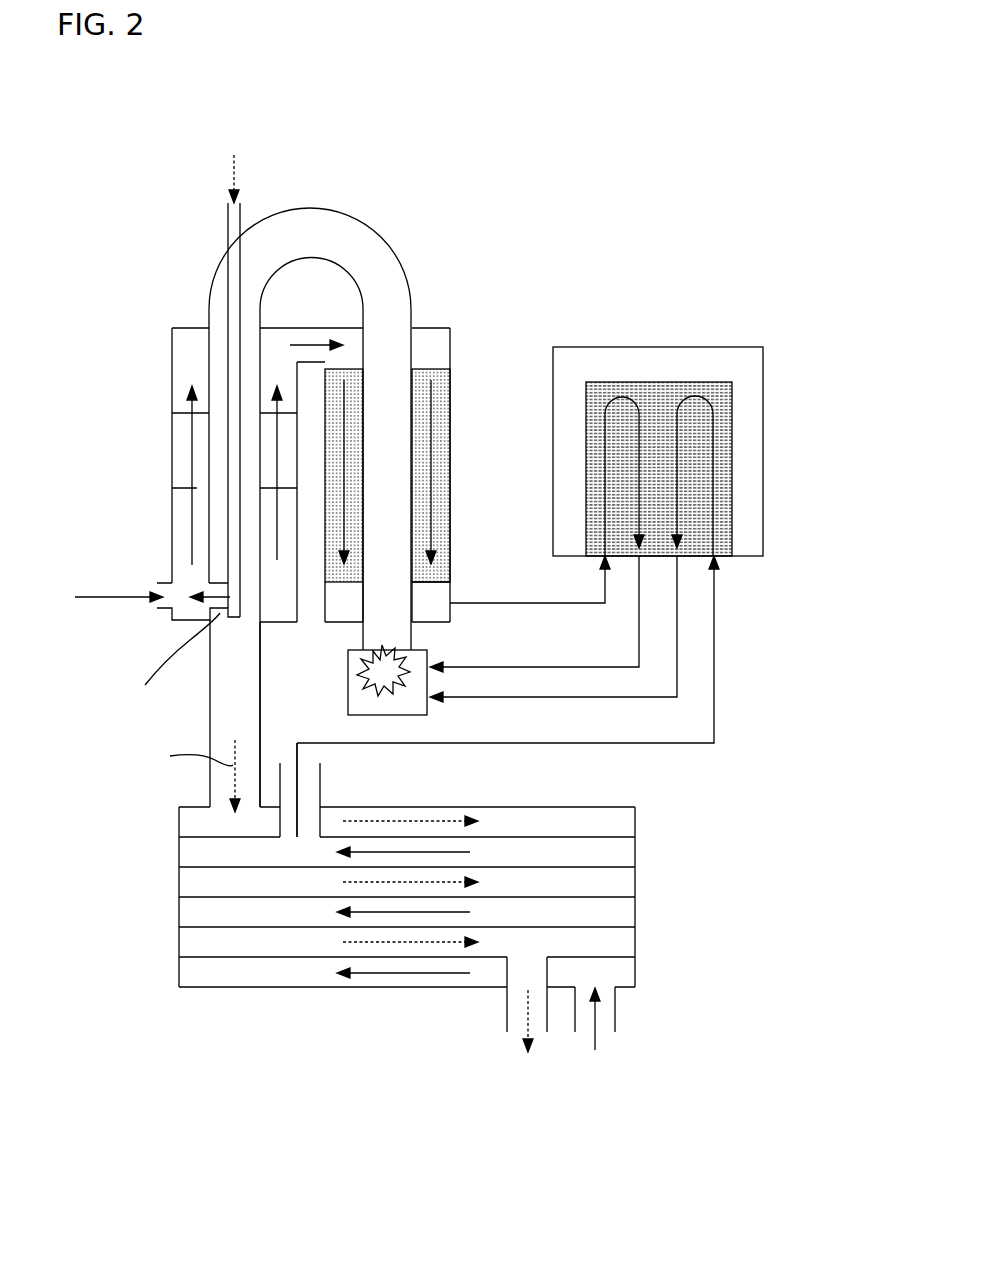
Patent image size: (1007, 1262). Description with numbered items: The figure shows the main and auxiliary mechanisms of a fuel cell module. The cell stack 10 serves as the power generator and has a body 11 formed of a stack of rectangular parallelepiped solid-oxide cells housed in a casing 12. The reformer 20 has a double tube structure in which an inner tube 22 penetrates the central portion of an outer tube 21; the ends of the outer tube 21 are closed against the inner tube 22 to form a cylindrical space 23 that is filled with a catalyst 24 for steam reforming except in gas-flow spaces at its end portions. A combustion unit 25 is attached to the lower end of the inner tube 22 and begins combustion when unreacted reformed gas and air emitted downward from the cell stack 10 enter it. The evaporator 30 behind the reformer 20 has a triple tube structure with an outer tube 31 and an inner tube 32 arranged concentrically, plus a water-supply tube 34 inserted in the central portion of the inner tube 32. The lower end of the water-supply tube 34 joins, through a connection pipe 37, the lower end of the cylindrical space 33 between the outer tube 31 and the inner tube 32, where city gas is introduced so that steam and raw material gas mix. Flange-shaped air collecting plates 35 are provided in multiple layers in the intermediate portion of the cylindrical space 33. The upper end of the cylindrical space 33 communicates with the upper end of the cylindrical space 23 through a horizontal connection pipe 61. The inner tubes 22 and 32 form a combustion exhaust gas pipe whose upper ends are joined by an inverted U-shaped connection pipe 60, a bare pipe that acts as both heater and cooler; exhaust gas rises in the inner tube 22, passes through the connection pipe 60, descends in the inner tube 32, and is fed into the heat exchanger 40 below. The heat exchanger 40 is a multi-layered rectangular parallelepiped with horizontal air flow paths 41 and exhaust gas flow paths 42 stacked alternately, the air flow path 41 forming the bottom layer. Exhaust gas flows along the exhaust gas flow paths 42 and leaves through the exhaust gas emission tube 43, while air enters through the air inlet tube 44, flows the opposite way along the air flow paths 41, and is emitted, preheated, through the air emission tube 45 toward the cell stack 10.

The cell stack 10 is at (563, 501).
The body 11 is at (735, 450).
The casing 12 is at (655, 346).
The reformer 20 is at (423, 534).
The outer tube 21 is at (452, 532).
The inner tube 22 is at (432, 495).
The cylindrical space 23 is at (340, 598).
The catalyst 24 is at (442, 398).
The combustion unit 25 is at (428, 655).
The evaporator 30 is at (160, 440).
The outer tube 31 is at (173, 478).
The inner tube 32 is at (208, 383).
The cylindrical space 33 is at (185, 349).
The water-supply tube 34 is at (232, 309).
The air collecting plates 35 is at (173, 420).
The connection pipe 37 is at (220, 590).
The heat exchanger 40 is at (398, 860).
The air flow path 41 is at (636, 848).
The exhaust gas flow paths 42 is at (636, 814).
The exhaust gas emission tube 43 is at (507, 998).
The air inlet tube 44 is at (613, 1008).
The air emission tube 45 is at (320, 775).
The connection pipe 60 is at (310, 208).
The connection pipe 61 is at (303, 327).